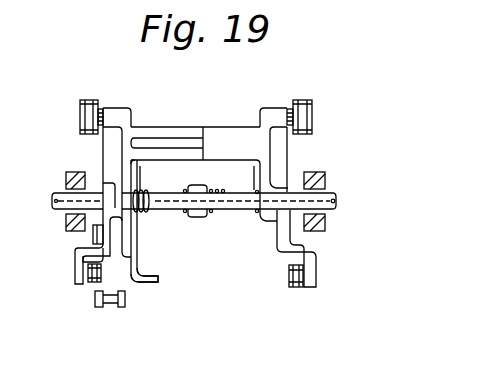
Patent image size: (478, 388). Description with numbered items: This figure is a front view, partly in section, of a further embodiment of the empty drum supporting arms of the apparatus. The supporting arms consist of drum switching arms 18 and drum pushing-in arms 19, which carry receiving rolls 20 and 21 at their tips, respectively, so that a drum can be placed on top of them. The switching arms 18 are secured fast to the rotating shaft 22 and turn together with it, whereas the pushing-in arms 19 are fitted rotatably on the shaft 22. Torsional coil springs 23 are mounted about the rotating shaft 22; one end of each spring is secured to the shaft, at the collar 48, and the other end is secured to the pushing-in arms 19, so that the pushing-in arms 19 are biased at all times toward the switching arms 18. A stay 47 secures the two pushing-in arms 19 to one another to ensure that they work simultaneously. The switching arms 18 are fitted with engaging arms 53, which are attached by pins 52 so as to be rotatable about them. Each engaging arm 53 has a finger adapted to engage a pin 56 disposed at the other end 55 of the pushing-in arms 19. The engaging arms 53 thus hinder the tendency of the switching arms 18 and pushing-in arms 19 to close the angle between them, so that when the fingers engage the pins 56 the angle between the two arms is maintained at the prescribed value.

The drum switching arms 18 is at (76, 275).
The drum pushing-in arms 19 is at (118, 145).
The receiving rolls 20 is at (96, 282).
The receiving rolls 21 is at (89, 99).
The rotating shaft 22 is at (331, 192).
The torsional coil springs 23 is at (141, 212).
The stay 47 is at (181, 127).
The collar 48 is at (200, 216).
The pins 52 is at (92, 236).
The engaging arms 53 is at (100, 245).
The other end of pushing-in arms 55 is at (129, 273).
The pins 56 is at (104, 306).